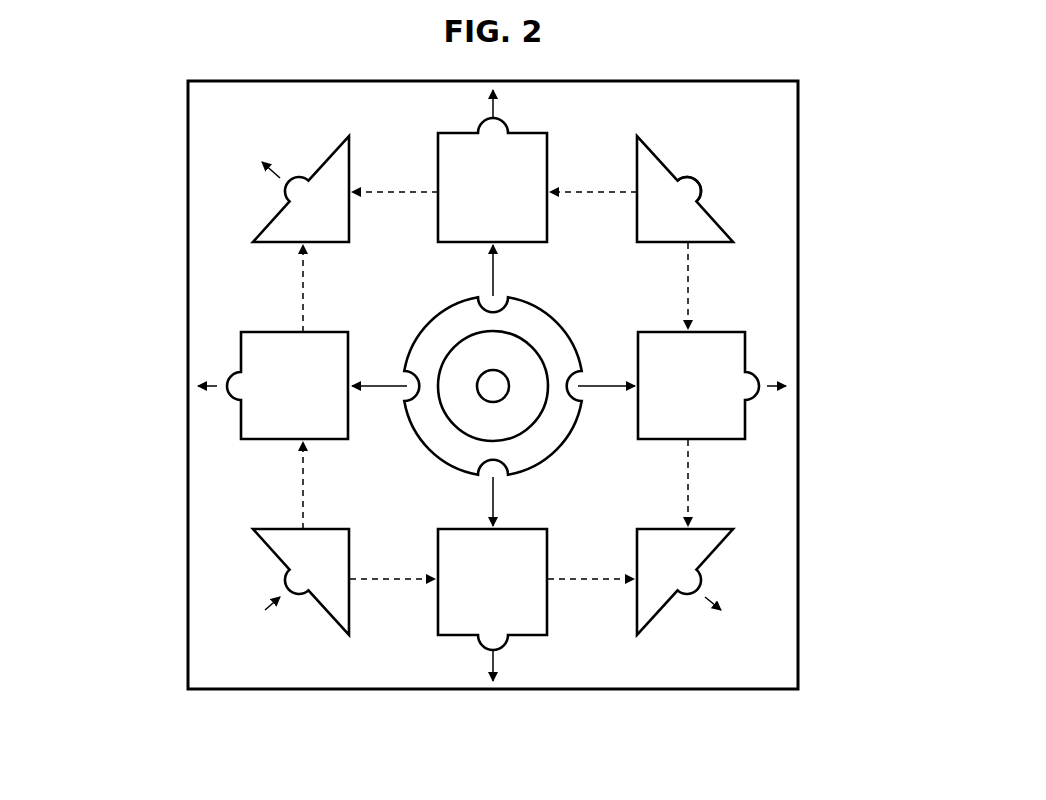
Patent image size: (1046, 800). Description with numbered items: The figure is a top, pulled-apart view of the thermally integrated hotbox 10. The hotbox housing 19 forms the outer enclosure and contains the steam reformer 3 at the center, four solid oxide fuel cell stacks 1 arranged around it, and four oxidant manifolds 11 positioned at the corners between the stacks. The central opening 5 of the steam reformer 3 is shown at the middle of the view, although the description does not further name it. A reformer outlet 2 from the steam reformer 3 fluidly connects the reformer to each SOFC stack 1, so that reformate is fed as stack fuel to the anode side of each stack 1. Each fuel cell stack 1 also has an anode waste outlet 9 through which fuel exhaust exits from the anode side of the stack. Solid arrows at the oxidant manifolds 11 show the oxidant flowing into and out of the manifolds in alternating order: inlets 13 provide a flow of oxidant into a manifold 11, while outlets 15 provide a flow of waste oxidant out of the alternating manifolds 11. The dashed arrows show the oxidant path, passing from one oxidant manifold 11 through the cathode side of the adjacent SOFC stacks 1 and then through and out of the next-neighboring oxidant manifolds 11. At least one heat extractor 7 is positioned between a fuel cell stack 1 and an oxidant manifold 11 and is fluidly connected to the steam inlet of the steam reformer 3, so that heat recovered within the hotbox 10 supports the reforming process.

The solid oxide fuel cell stack 1 is at (745, 413).
The reformer outlet 2 is at (390, 390).
The steam reformer 3 is at (465, 428).
The central opening of hub 5 is at (497, 387).
The heat extractor 7 is at (443, 315).
The anode waste outlet 9 is at (770, 383).
The thermally integrated hotbox 10 is at (647, 67).
The oxidant manifold 11 is at (700, 207).
The inlet 13 is at (712, 172).
The outlet 15 is at (713, 593).
The hotbox housing 19 is at (798, 247).